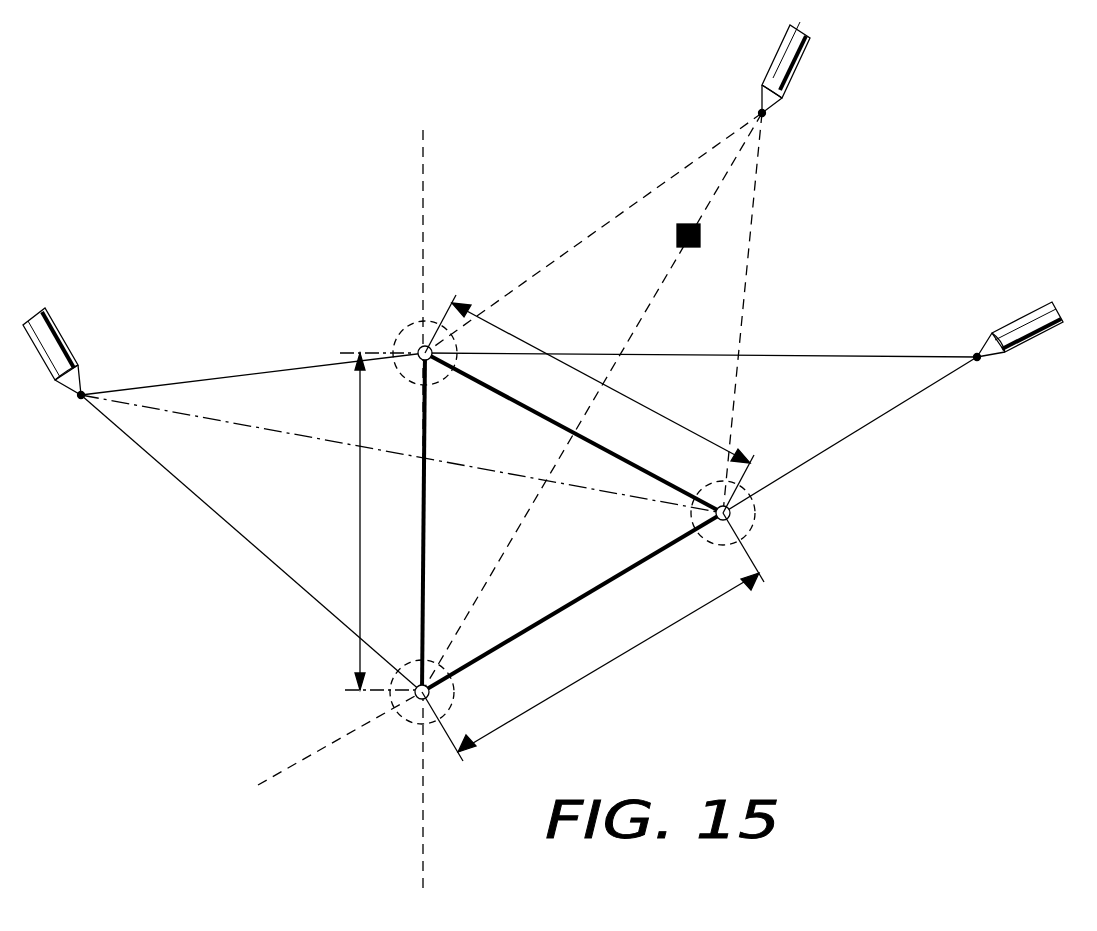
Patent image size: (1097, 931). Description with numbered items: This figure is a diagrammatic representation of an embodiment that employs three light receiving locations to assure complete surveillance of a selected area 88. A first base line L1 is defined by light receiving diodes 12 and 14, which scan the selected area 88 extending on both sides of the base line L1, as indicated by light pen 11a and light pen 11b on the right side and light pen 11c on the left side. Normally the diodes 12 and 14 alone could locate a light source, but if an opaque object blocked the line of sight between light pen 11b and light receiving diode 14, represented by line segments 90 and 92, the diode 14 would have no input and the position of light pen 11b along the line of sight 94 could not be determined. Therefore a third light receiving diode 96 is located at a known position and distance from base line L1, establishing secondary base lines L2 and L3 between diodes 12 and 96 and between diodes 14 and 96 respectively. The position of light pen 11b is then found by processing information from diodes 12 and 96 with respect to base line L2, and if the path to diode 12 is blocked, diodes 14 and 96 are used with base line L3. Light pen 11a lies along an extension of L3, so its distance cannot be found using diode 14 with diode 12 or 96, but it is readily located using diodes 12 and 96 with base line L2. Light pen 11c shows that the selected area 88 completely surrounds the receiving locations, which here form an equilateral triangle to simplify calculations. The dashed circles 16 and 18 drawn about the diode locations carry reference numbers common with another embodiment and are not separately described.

The light pen 11a is at (1013, 323).
The light pen 11b is at (790, 55).
The light pen 11c is at (72, 332).
The light receiving diode 12 is at (412, 345).
The light receiving diode 14 is at (430, 698).
The sensor region about position 12 16 is at (436, 320).
The sensor region about position 14 18 is at (456, 685).
The selected area 88 is at (675, 236).
The line segment 90 is at (725, 173).
The line segment 92 is at (745, 278).
The line of sight 94 is at (640, 200).
The third light receiving diode 96 is at (731, 515).
The first base line L1 is at (360, 513).
The secondary base line L2 is at (618, 400).
The secondary base line L3 is at (597, 669).